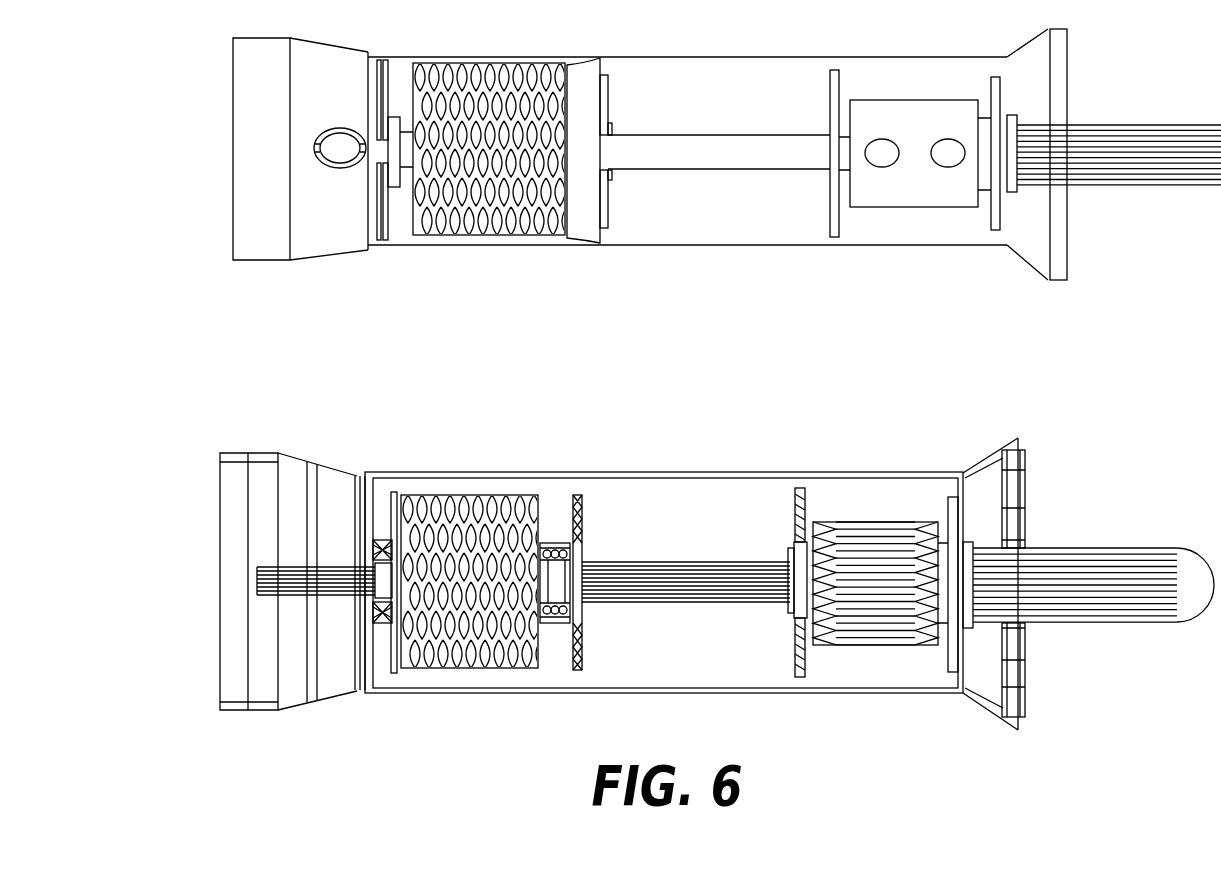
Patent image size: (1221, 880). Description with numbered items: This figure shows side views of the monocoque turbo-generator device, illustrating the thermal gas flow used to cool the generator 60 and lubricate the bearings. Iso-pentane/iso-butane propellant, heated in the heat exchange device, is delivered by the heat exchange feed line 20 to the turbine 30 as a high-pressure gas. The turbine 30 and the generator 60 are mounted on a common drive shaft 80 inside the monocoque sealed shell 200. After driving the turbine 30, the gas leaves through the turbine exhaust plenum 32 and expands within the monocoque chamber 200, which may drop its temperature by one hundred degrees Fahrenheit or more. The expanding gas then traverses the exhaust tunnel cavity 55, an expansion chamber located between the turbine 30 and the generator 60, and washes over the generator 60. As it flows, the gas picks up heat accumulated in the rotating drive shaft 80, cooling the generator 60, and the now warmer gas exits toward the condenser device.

The heat exchange feed line 20 is at (263, 565).
The turbine 30 is at (488, 237).
The turbine exhaust plenum 32 is at (583, 168).
The exhaust tunnel cavity 55 is at (703, 232).
The generator 60 is at (880, 522).
The drive shaft 80 is at (760, 562).
The monocoque sealed shell 200 is at (563, 470).